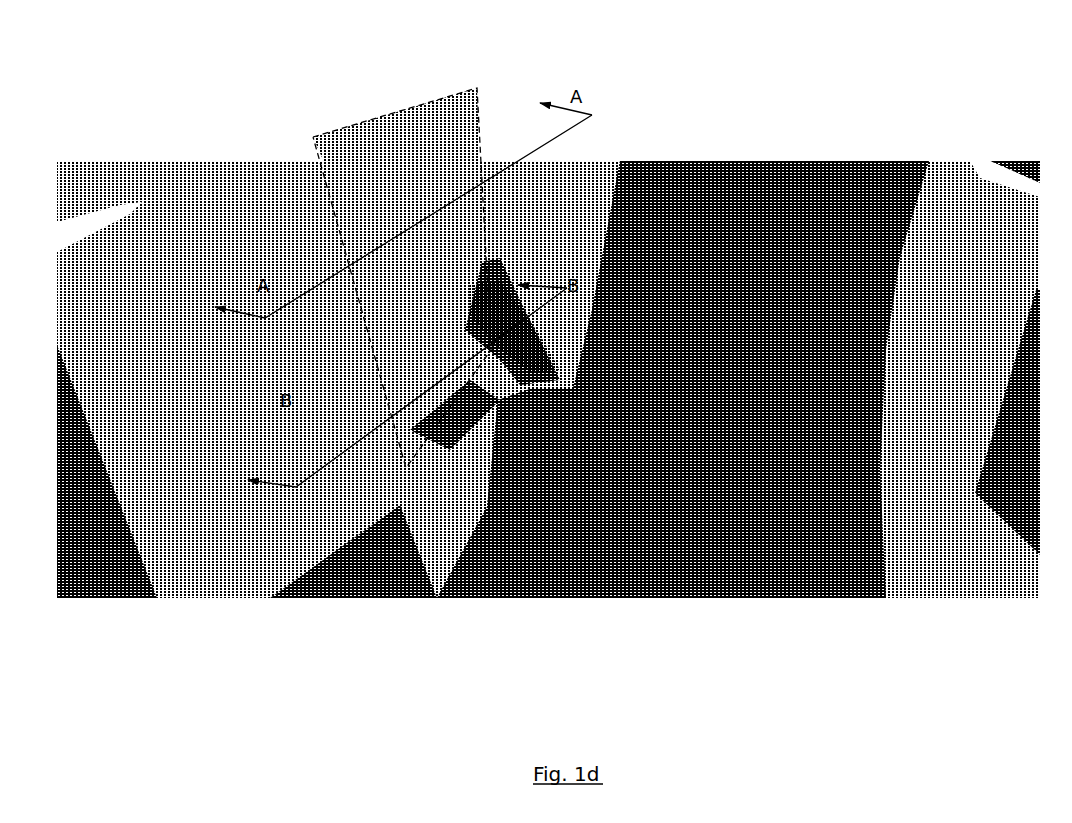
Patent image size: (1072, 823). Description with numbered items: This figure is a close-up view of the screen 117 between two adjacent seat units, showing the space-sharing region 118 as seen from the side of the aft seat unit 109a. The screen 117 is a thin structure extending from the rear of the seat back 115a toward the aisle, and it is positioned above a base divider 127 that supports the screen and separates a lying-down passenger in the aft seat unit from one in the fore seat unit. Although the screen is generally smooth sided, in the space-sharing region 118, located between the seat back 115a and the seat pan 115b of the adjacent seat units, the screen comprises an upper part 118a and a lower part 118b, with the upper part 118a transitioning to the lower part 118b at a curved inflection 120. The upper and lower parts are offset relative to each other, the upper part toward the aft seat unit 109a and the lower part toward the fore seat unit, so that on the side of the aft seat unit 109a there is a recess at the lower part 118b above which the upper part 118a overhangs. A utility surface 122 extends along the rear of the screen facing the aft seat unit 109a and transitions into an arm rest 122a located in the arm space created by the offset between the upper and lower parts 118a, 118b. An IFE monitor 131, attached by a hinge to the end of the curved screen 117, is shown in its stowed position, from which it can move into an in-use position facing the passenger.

The aft seat unit 109a is at (750, 128).
The screen 117 is at (264, 186).
The IFE monitor 131 is at (114, 237).
The space-sharing region 118 is at (447, 97).
The upper part 118a is at (455, 256).
The lower part 118b is at (478, 346).
The curved inflection 120 is at (460, 297).
The utility surface 122 is at (498, 290).
The arm rest 122a is at (459, 407).
The seat back 115a is at (746, 321).
The seat pan 115b is at (598, 555).
The base divider 127 is at (370, 572).